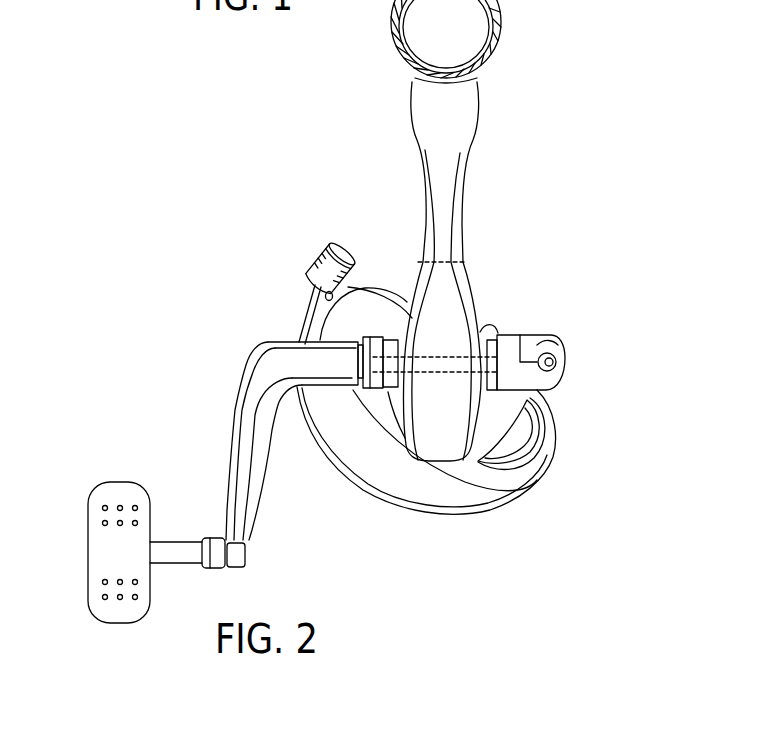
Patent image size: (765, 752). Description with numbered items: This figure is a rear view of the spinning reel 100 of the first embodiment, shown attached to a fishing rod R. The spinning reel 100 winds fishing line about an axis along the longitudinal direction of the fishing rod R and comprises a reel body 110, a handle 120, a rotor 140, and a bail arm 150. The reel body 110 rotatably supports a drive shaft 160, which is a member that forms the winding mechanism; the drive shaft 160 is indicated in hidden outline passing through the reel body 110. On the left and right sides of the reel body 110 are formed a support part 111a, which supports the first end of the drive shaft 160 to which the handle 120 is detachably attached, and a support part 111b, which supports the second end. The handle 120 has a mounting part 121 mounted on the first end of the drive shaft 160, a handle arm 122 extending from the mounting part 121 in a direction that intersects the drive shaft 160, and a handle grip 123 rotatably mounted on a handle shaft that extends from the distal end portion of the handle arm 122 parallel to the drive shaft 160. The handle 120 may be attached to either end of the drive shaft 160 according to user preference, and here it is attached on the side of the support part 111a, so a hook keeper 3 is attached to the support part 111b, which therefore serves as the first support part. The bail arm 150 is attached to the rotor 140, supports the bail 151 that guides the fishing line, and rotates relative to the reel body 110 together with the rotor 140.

The spinning reel 100 is at (213, 247).
The fishing rod R is at (498, 42).
The reel body 110 is at (464, 250).
The support part 111a is at (383, 390).
The support part 111b is at (491, 340).
The hook keeper 3 is at (562, 350).
The handle 120 is at (270, 343).
The mounting part 121 is at (378, 392).
The handle arm 122 is at (227, 490).
The handle grip 123 is at (128, 625).
The rotor 140 is at (553, 423).
The bail arm 150 is at (357, 284).
The bail 151 is at (300, 312).
The drive shaft 160 is at (452, 352).